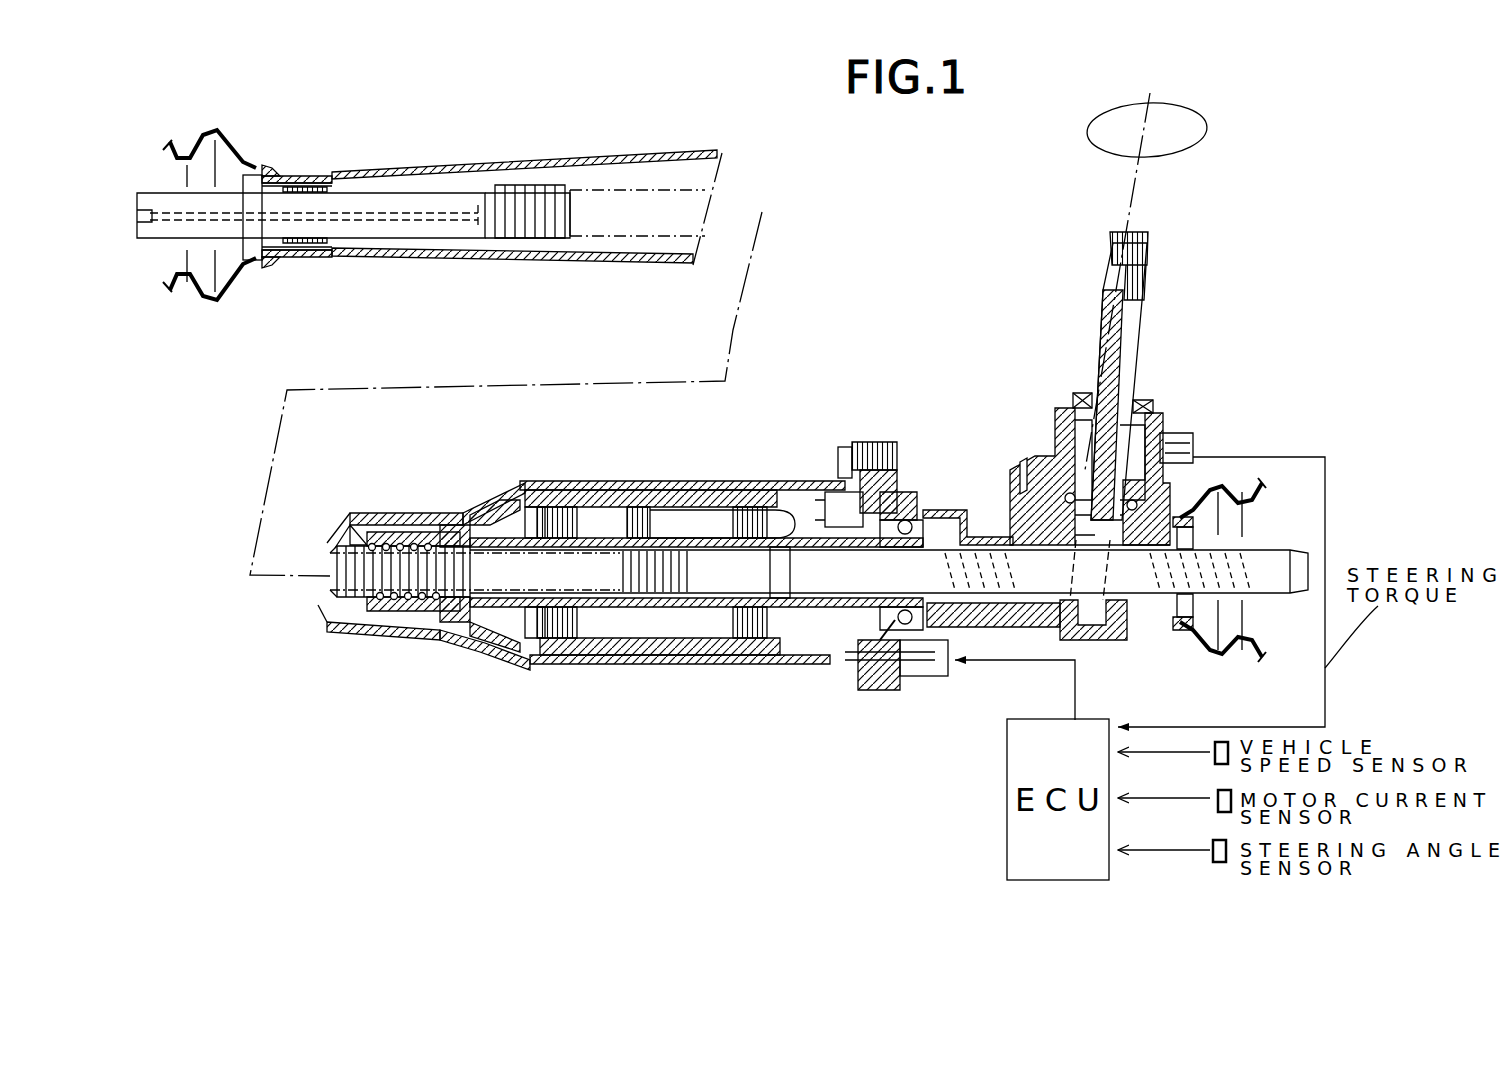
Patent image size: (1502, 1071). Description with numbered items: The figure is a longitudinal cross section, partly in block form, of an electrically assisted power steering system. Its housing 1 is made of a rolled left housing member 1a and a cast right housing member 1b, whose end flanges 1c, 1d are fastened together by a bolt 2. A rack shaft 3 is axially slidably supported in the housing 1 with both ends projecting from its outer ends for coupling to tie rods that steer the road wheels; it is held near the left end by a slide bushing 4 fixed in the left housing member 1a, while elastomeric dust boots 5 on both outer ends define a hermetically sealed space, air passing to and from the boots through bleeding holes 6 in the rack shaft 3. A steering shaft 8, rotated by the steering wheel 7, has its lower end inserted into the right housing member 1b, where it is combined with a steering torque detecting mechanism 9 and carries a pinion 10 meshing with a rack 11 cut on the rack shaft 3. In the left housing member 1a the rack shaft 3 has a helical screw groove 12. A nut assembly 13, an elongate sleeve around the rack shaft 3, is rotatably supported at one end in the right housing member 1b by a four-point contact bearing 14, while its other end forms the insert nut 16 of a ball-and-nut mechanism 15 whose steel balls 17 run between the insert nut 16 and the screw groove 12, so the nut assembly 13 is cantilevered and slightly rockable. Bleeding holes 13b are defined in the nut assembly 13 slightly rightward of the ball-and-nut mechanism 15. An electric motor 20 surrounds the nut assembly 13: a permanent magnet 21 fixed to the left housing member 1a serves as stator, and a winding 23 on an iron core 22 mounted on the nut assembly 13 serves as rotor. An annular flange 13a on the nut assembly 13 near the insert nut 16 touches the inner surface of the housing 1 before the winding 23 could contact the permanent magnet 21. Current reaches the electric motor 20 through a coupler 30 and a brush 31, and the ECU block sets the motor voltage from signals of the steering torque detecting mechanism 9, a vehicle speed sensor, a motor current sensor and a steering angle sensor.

The housing 1 is at (794, 466).
The left housing member 1a is at (633, 482).
The right housing member 1b is at (963, 515).
The end flange 1c is at (868, 442).
The end flange 1d is at (878, 692).
The bolt 2 is at (885, 443).
The rack shaft 3 is at (640, 200).
The slide bushing 4 is at (305, 190).
The dust boot 5 is at (244, 165).
The bleeding hole 6 is at (410, 210).
The steering wheel 7 is at (1205, 140).
The steering shaft 8 is at (1130, 340).
The steering torque detecting mechanism 9 is at (1160, 420).
The pinion 10 is at (1110, 598).
The rack 11 is at (1190, 582).
The screw groove 12 is at (447, 525).
The nut assembly 13 is at (742, 500).
The annular flange 13a is at (470, 520).
The bleeding hole 13b is at (488, 635).
The four-point contact bearing 14 is at (905, 508).
The ball-and-nut mechanism 15 is at (355, 515).
The insert nut 16 is at (412, 602).
The steel ball 17 is at (426, 548).
The electric motor 20 is at (690, 490).
The permanent magnet 21 is at (620, 648).
The iron core 22 is at (508, 525).
The winding 23 is at (575, 512).
The coupler 30 is at (918, 672).
The brush 31 is at (838, 492).